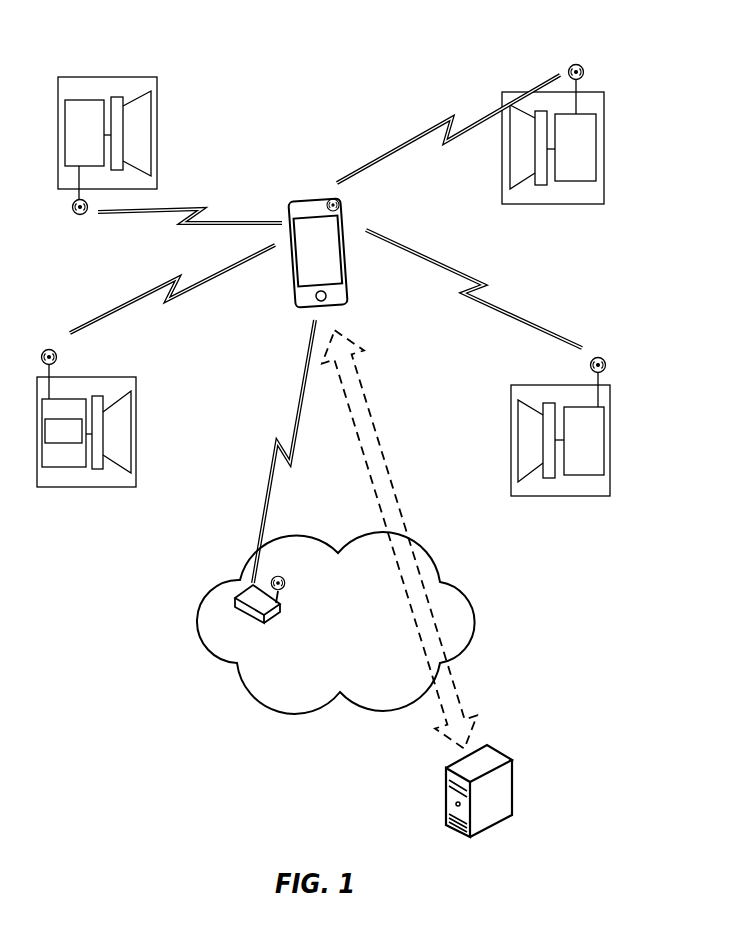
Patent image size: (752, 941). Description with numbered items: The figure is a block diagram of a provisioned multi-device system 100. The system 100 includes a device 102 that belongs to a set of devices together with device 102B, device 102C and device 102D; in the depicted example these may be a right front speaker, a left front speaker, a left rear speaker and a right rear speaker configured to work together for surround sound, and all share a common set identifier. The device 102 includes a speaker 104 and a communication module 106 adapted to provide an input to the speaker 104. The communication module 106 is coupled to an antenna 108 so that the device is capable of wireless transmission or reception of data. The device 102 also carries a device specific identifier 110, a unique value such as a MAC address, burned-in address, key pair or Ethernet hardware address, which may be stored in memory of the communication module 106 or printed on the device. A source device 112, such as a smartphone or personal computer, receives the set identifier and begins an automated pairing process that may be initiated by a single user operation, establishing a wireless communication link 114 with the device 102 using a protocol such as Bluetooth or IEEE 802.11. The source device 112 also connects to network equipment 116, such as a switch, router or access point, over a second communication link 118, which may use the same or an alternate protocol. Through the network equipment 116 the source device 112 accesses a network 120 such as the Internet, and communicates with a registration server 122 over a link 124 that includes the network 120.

The provisioned multi-device system 100 is at (212, 26).
The device 102 is at (114, 434).
The device 102B is at (528, 497).
The device 102C is at (520, 204).
The device 102D is at (143, 78).
The speaker 104 is at (117, 463).
The communication module 106 is at (53, 467).
The antenna 108 is at (53, 371).
The device specific identifier 110 is at (63, 431).
The source device 112 is at (343, 208).
The communication link 114 is at (205, 285).
The network equipment 116 is at (240, 607).
The second communication link 118 is at (288, 465).
The network 120 is at (278, 708).
The registration server 122 is at (502, 752).
The link 124 is at (376, 435).